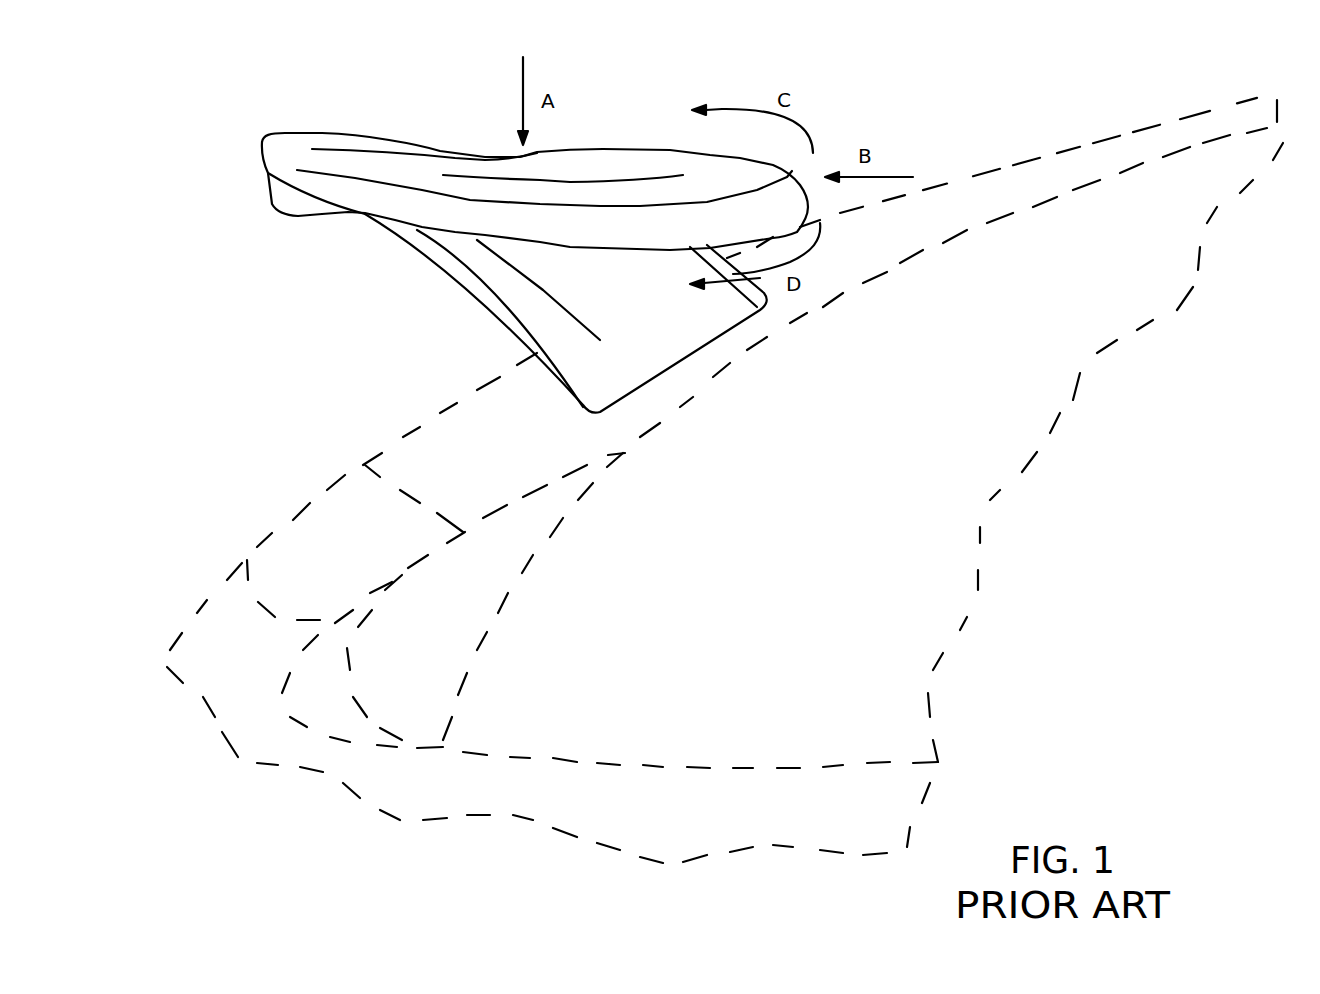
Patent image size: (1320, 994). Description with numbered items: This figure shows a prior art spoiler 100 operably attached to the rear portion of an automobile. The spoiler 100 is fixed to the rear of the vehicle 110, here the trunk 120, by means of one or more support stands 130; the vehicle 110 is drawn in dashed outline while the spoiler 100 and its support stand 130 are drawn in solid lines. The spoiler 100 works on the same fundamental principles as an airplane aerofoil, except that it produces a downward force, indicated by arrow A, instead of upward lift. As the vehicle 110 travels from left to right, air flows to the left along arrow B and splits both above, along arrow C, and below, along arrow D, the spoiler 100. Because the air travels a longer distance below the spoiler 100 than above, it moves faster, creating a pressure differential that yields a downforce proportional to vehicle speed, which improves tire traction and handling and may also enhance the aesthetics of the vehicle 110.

The spoiler 100 is at (372, 193).
The vehicle 110 is at (1002, 477).
The trunk 120 is at (487, 433).
The support stand 130 is at (645, 348).